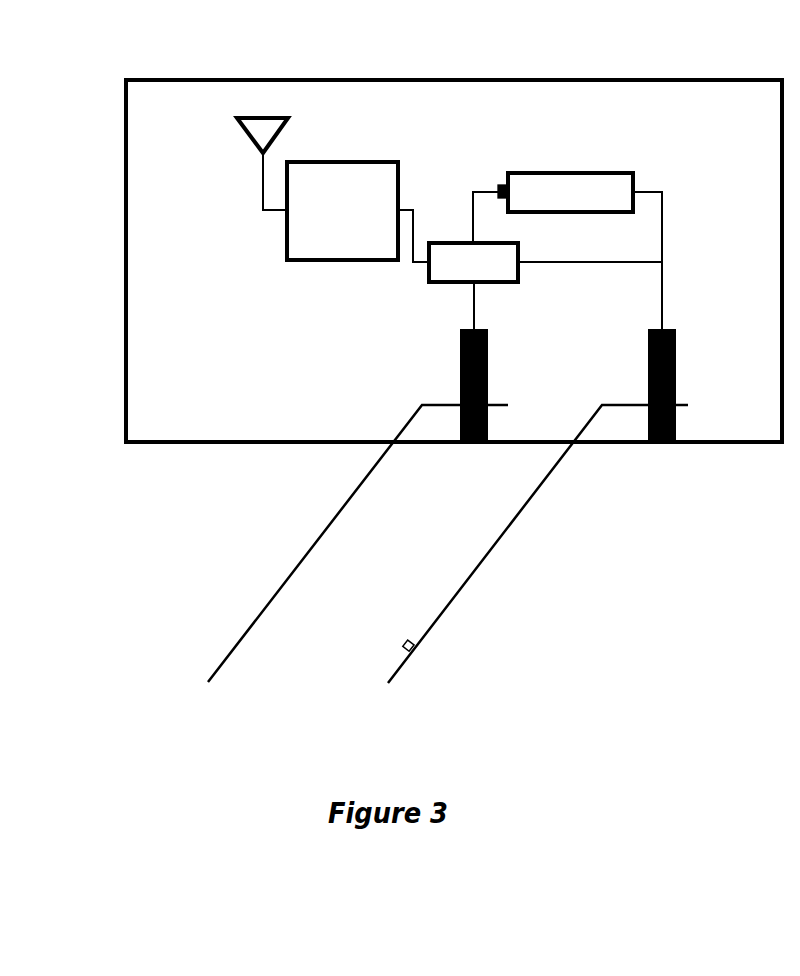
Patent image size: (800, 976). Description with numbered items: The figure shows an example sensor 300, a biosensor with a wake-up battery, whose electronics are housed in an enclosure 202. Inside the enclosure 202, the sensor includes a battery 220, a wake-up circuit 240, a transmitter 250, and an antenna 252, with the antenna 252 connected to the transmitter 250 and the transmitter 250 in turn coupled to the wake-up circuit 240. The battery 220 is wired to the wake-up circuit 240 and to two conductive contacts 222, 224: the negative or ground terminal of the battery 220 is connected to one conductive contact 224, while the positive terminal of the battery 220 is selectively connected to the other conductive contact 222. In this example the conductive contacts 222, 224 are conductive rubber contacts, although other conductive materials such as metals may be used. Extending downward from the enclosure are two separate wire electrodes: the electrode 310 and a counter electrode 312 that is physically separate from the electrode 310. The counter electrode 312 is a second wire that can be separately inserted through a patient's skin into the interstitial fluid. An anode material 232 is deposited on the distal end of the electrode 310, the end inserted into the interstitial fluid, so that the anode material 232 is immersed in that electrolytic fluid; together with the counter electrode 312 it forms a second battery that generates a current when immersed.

The sensor 300 is at (74, 87).
The housing / device enclosure 202 is at (126, 261).
The antenna 252 is at (246, 136).
The transmitter 250 is at (342, 211).
The wake-up circuit 240 is at (473, 262).
The battery 220 is at (565, 192).
The conductive contact 222 is at (461, 345).
The conductive contact 224 is at (676, 341).
The counter electrode 312 is at (310, 552).
The anode material 232 is at (404, 647).
The electrode 310 is at (400, 665).